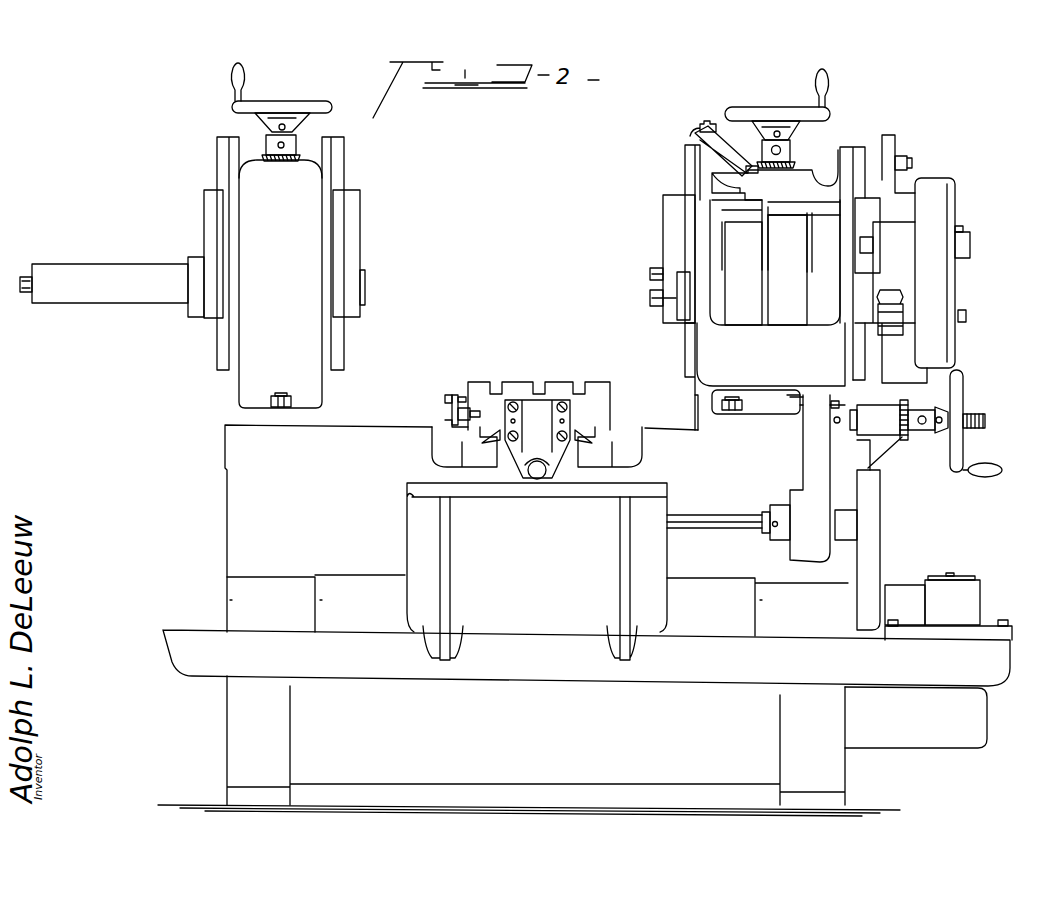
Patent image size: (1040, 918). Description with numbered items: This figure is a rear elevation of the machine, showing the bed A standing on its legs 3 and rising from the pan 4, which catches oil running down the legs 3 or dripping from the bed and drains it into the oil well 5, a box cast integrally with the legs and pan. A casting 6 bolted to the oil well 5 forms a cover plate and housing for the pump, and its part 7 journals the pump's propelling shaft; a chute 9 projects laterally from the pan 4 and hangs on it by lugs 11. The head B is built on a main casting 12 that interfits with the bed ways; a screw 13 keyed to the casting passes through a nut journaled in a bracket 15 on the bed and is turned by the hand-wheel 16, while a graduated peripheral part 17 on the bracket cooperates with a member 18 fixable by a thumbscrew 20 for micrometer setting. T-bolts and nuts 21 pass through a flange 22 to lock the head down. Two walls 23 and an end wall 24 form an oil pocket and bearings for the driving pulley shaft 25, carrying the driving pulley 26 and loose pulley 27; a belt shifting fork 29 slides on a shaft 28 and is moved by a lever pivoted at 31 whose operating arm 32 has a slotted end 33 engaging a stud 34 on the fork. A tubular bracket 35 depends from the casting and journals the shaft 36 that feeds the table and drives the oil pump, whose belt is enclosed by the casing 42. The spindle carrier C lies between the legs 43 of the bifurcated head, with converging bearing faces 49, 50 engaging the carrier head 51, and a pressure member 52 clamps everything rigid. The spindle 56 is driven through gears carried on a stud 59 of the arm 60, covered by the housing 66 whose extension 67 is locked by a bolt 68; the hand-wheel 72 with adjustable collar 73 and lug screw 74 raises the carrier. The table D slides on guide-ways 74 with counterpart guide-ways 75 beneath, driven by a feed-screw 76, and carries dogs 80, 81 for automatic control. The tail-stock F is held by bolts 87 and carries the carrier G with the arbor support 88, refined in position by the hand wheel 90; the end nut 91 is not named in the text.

The legs 3 is at (515, 610).
The pan 4 is at (352, 631).
The oil well 5 is at (983, 706).
The casting 6 is at (961, 599).
The part 7 is at (935, 606).
The chute 9 is at (537, 557).
The lugs 11 is at (431, 652).
The main casting 12 is at (697, 408).
The screw 13 is at (975, 415).
The bracket 15 is at (873, 408).
The hand-wheel 16 is at (963, 445).
The peripheral part 17 is at (904, 401).
The member 18 is at (913, 432).
The thumbscrew 20 is at (923, 425).
The T-bolts and nuts 21 is at (733, 397).
The flange 22 is at (770, 422).
The walls 23 is at (698, 242).
The end wall 24 is at (771, 354).
The driving pulley shaft 25 is at (653, 297).
The driving pulley 26 is at (787, 270).
The loose pulley 27 is at (743, 273).
The shaft 28 is at (740, 213).
The belt shifting fork 29 is at (804, 211).
The pivot 31 is at (708, 123).
The operating arm 32 is at (712, 150).
The slotted end 33 is at (766, 172).
The stud 34 is at (753, 165).
The tubular bracket 35 is at (815, 478).
The shaft 36 is at (727, 517).
The casing 42 is at (881, 522).
The leg 43 is at (846, 148).
The bearing faces 49 is at (684, 372).
The bearing faces 50 is at (853, 362).
The head 51 is at (663, 240).
The pressure member 52 is at (867, 235).
The spindle 56 is at (650, 273).
The stud 59 is at (971, 247).
The arm 60 is at (891, 302).
The housing 66 is at (940, 217).
The extension 67 is at (890, 136).
The bolt 68 is at (907, 159).
The hand-wheel 72 is at (775, 106).
The adjustable collar 73 is at (790, 158).
The lug screw 74 is at (485, 437).
The guide-ways 75 is at (537, 447).
The feed-screw 76 is at (537, 480).
The dog 80 is at (452, 395).
The dog 81 is at (450, 416).
The bolts 87 is at (282, 395).
The arbor support 88 is at (152, 272).
The hand wheel 90 is at (290, 104).
The nut 91 is at (27, 277).
The bed A is at (536, 530).
The head B is at (778, 402).
The spindle carrier C is at (681, 287).
The table D is at (478, 382).
The tail-stock F is at (274, 271).
The carrier G is at (349, 253).